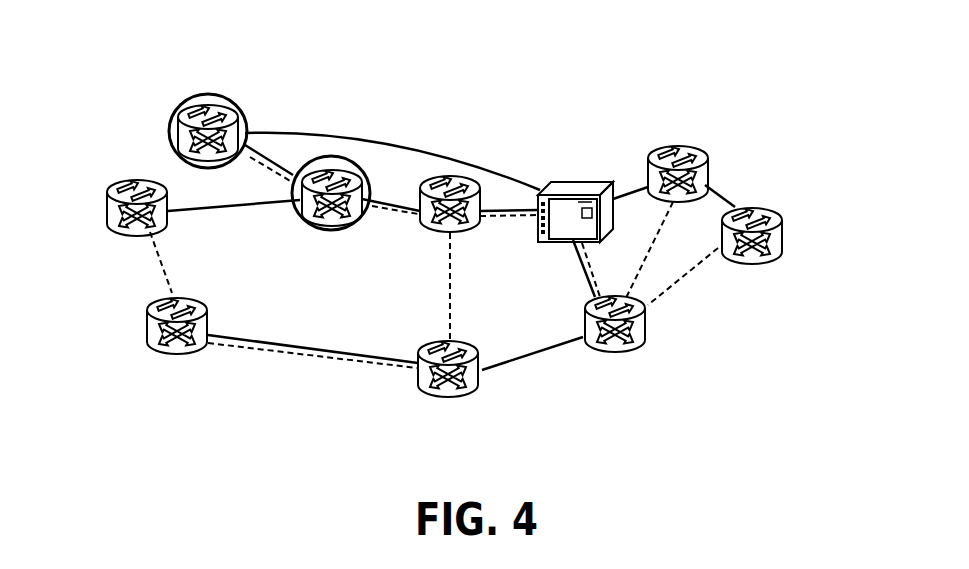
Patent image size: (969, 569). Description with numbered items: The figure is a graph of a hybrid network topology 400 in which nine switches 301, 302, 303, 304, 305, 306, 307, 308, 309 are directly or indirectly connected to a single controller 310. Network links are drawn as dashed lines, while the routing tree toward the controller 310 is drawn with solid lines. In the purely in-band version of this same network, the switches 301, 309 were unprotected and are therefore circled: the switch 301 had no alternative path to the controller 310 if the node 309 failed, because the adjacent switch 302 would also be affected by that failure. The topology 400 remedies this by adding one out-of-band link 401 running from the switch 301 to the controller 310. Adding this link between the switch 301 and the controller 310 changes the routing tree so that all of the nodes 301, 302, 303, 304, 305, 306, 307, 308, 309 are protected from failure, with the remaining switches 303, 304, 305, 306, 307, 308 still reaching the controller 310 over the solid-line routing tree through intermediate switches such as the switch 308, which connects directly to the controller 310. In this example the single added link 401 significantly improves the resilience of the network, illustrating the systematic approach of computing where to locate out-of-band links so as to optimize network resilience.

The topology 400 is at (709, 78).
The out-of-band link 401 is at (337, 137).
The switch 301 is at (170, 129).
The switch 302 is at (106, 198).
The switch 303 is at (168, 352).
The switch 304 is at (453, 395).
The switch 305 is at (602, 350).
The switch 306 is at (765, 262).
The switch 307 is at (690, 145).
The switch 308 is at (428, 229).
The switch 309 is at (332, 227).
The controller 310 is at (561, 187).